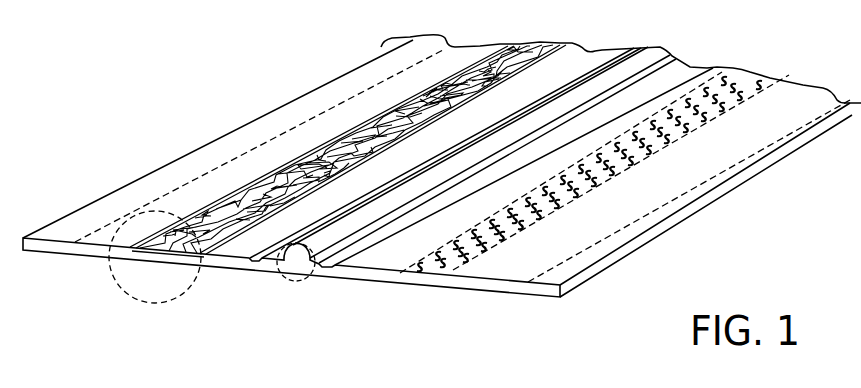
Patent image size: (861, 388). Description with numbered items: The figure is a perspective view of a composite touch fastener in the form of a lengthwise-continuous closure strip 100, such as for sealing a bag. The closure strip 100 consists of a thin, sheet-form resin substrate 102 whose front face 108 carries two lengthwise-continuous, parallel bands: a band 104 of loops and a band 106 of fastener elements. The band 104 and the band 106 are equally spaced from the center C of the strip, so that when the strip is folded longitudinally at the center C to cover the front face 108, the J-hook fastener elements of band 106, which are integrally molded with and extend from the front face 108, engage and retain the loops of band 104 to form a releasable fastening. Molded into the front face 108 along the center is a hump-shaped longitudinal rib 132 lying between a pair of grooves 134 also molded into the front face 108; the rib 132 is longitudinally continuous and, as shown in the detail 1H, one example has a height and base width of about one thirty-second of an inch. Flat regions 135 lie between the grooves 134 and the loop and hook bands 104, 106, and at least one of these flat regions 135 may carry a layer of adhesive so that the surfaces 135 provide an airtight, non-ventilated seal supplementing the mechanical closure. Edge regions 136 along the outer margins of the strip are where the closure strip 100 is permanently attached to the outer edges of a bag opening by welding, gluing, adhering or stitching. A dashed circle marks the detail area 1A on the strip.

The closure strip 100 is at (188, 92).
The substrate 102 is at (656, 236).
The band of loops 104 is at (528, 52).
The band of fastener elements 106 is at (770, 77).
The front face 108 is at (800, 92).
The longitudinal rib 132 is at (660, 47).
The grooves 134 is at (300, 228).
The flat regions 135 is at (602, 52).
The edge regions 136 is at (337, 97).
The detail circle 1A is at (133, 300).
The detail view of rib 1H is at (281, 283).
The center C is at (297, 278).